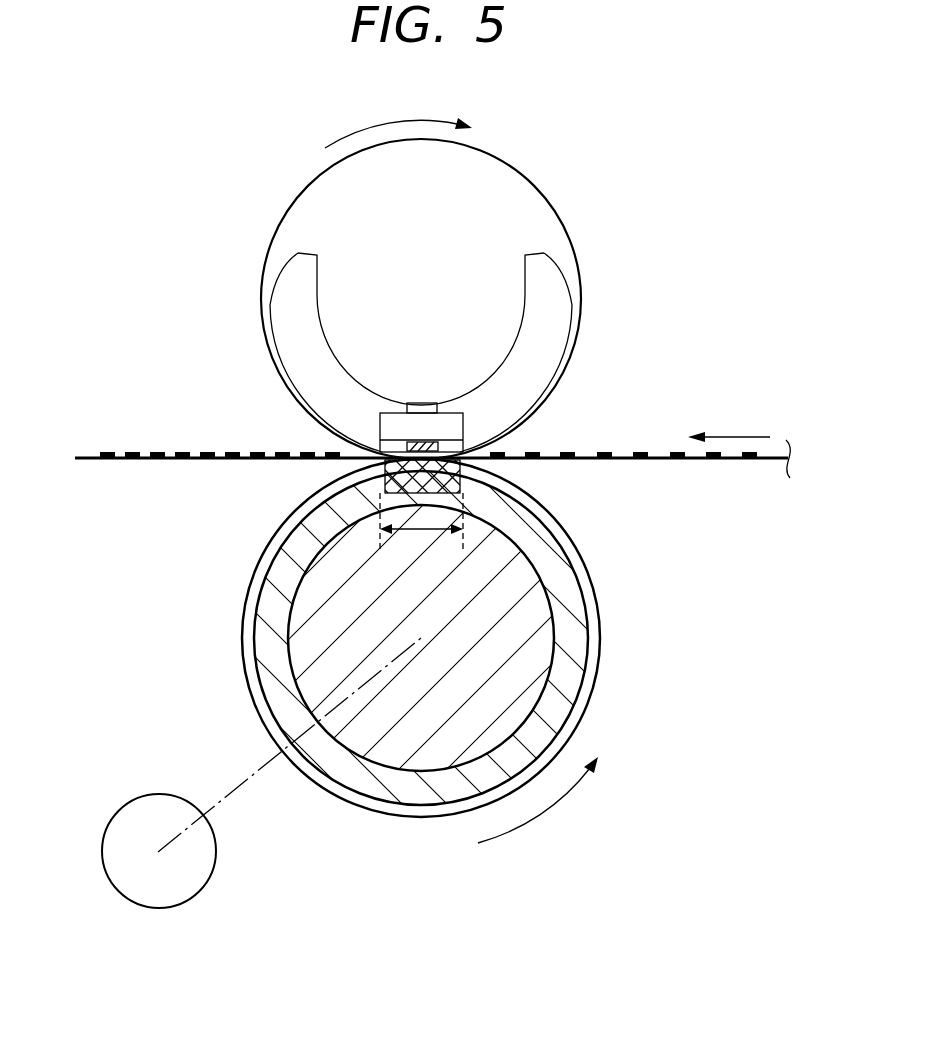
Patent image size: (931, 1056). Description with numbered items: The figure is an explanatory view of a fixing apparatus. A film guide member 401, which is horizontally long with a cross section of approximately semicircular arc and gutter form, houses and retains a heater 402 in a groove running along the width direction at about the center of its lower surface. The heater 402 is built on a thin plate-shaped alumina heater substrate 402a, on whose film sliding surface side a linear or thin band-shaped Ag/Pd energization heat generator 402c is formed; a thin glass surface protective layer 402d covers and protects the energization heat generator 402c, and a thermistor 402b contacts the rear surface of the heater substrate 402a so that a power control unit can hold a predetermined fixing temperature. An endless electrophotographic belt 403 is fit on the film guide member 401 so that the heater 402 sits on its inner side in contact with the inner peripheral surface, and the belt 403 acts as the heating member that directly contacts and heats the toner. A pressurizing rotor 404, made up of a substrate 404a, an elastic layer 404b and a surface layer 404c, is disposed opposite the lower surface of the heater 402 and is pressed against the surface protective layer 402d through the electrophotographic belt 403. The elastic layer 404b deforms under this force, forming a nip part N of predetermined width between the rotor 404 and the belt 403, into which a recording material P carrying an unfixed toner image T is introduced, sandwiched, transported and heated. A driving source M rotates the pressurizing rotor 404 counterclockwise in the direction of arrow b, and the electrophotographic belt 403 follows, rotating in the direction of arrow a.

The film guide member 401 is at (562, 328).
The heater 402 is at (503, 279).
The heater substrate 402a is at (447, 420).
The thermistor 402b is at (423, 405).
The energization heat generator 402c is at (417, 447).
The surface protective layer 402d is at (395, 445).
The electrophotographic belt 403 is at (532, 180).
The pressurizing rotor 404 is at (433, 626).
The substrate 404a is at (523, 578).
The elastic layer 404b is at (578, 618).
The surface layer 404c is at (595, 660).
The nip part N is at (422, 501).
The recording material P is at (657, 455).
The unfixed toner image T is at (568, 455).
The driving source M is at (160, 793).
The arrow a is at (398, 123).
The arrow b is at (538, 802).